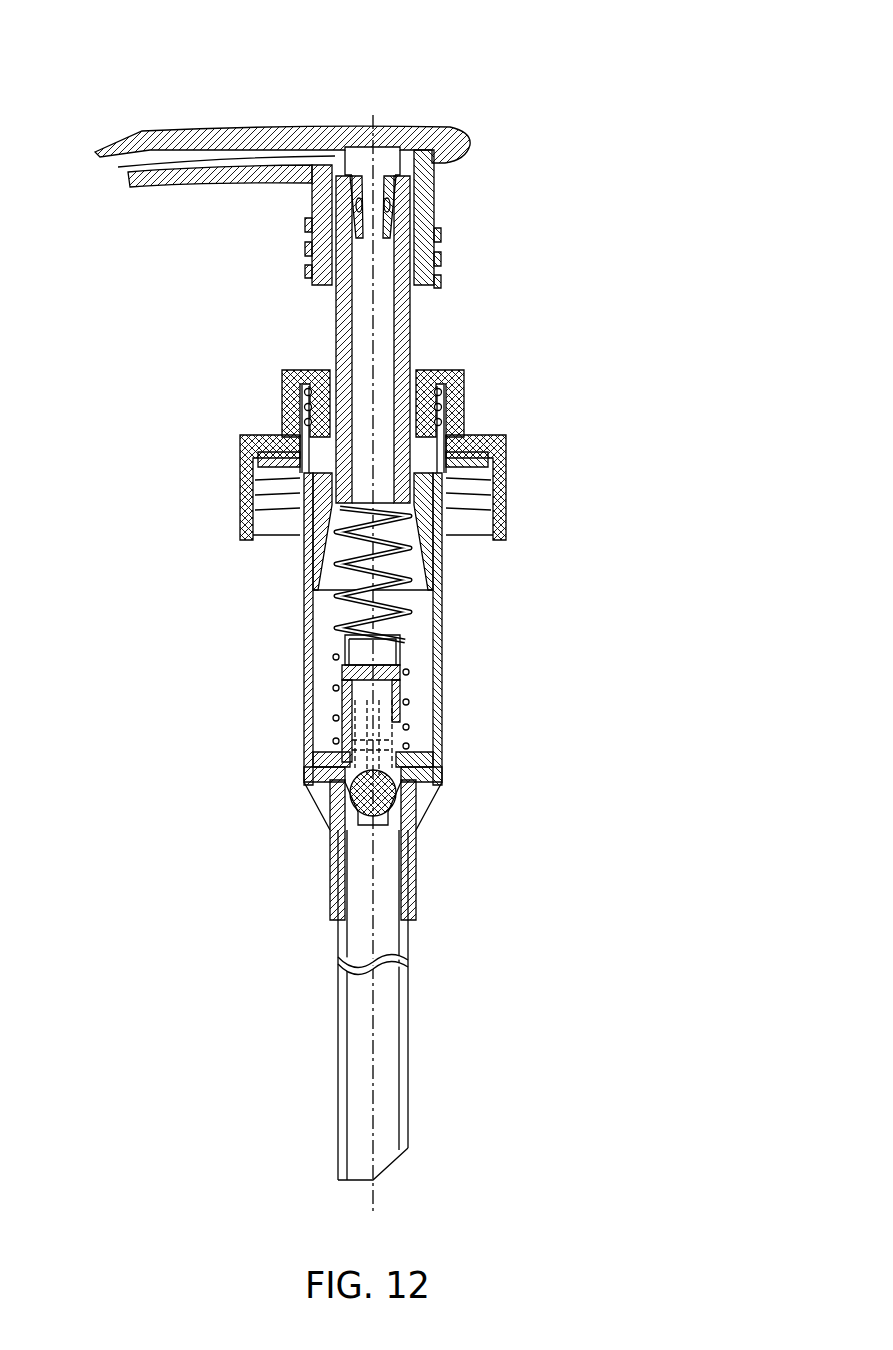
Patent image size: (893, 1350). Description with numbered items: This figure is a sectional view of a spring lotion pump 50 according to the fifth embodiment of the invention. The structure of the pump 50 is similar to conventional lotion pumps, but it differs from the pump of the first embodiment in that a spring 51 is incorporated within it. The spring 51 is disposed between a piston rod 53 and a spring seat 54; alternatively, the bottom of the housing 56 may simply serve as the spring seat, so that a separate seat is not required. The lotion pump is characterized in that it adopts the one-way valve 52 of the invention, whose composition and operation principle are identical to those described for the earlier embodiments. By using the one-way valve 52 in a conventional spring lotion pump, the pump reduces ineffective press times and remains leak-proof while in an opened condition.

The spring lotion pump 50 is at (98, 114).
The spring 51 is at (406, 610).
The one-way valve 52 is at (417, 227).
The piston rod 53 is at (410, 326).
The spring seat 54 is at (435, 759).
The housing 56 is at (441, 597).